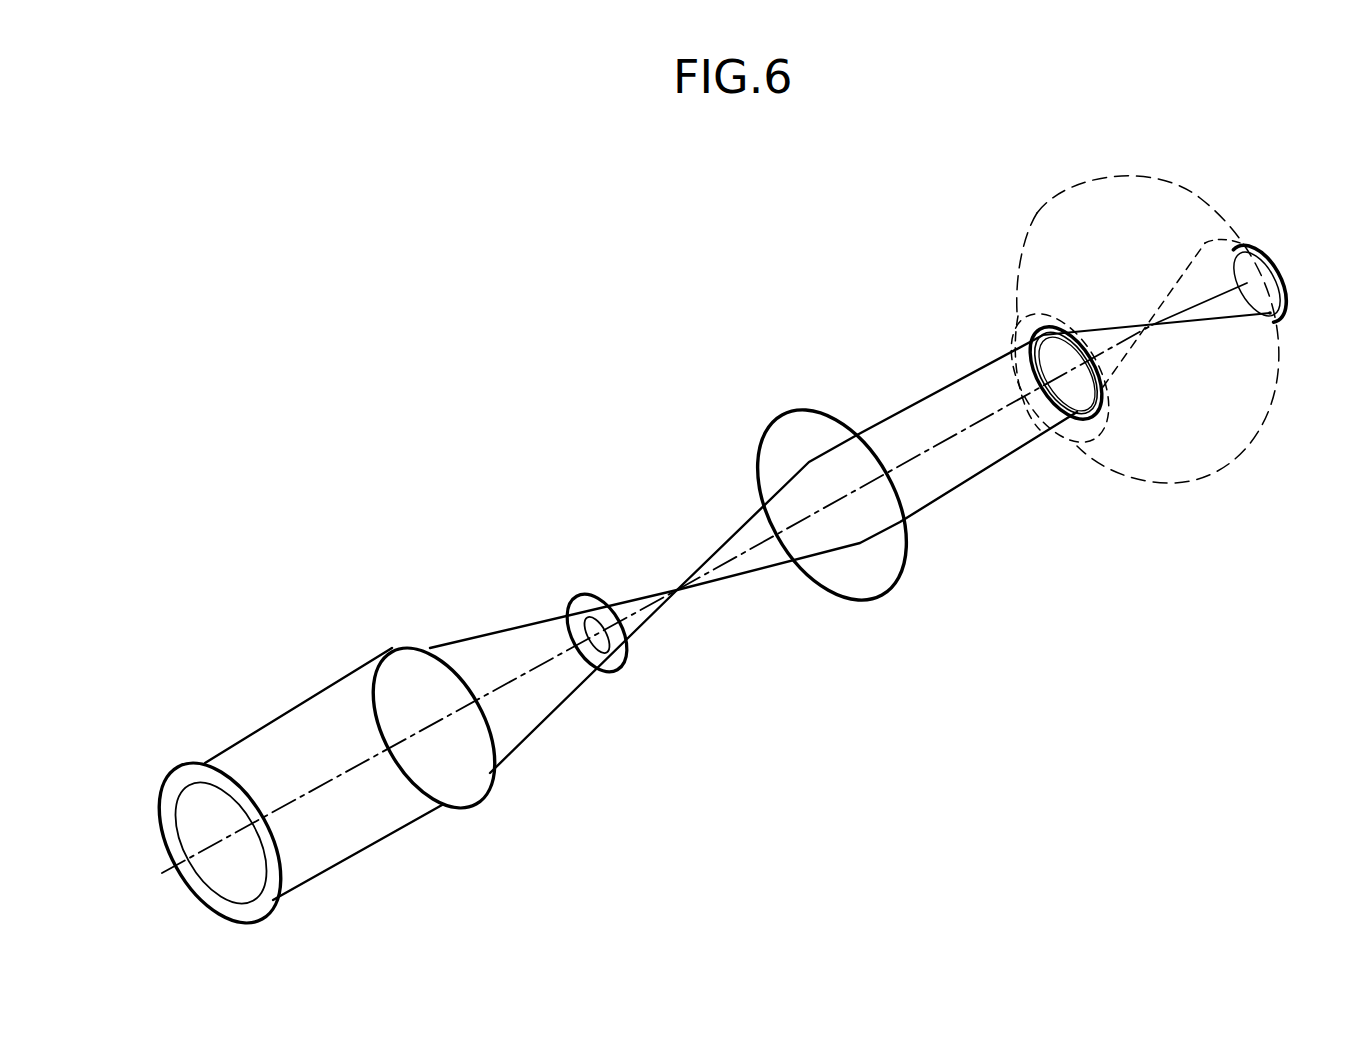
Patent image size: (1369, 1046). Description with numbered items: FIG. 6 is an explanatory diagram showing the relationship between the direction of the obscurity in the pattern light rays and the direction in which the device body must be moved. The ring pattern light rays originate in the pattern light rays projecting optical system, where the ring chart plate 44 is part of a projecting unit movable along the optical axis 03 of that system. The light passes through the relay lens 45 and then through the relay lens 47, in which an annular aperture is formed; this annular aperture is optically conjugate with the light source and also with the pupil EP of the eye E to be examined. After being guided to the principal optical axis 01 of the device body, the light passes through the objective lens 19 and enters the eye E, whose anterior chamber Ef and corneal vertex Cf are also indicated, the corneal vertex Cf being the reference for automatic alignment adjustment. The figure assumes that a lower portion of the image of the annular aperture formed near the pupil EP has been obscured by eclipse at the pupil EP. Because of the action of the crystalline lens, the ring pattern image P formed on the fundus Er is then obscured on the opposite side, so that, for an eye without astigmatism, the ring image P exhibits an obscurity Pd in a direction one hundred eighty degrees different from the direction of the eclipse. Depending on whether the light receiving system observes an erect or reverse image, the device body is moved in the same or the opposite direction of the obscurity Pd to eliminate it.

The ring chart plate 44 is at (190, 770).
The relay lens 45 is at (397, 648).
The optical axis of the pattern light rays projecting optical system 03 is at (305, 790).
The relay lens with annular aperture 47 is at (580, 595).
The objective lens 19 is at (780, 410).
The principal optical axis of the device body 01 is at (930, 444).
The pupil EP is at (1017, 313).
The corneal vertex Cf is at (1012, 396).
The anterior chamber Ef is at (1038, 419).
The eye to be examined E is at (1036, 216).
The obscurity Pd is at (1200, 220).
The fundus Er is at (1240, 270).
The ring pattern image P is at (1270, 313).